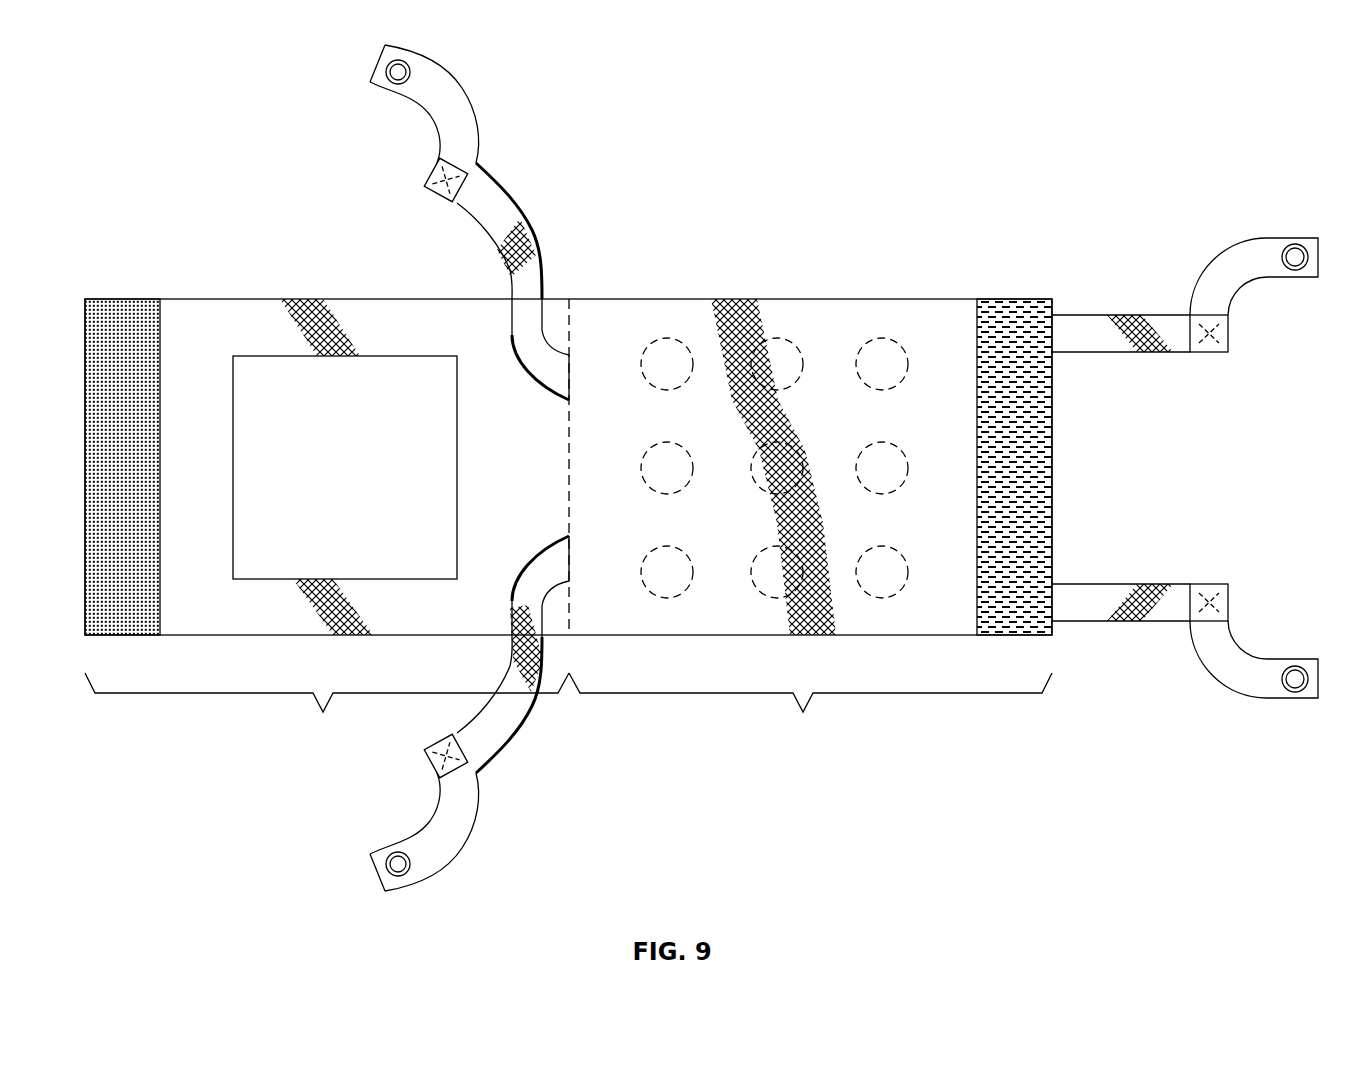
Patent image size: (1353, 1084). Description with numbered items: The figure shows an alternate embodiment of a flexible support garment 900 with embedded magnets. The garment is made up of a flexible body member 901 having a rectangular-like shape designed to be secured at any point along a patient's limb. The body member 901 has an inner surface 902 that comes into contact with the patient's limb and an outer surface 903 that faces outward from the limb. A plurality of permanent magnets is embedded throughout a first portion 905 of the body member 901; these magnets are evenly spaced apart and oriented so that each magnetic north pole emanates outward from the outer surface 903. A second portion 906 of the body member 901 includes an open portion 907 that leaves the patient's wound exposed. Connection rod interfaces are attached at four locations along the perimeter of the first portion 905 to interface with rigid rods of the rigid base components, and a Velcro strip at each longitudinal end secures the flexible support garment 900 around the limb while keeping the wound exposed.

The flexible support garment 900 is at (1022, 236).
The flexible body member 901 is at (193, 298).
The inner surface 902 is at (882, 327).
The outer surface 903 is at (787, 318).
The first portion 905 is at (810, 710).
The second portion 906 is at (327, 710).
The open portion 907 is at (295, 368).